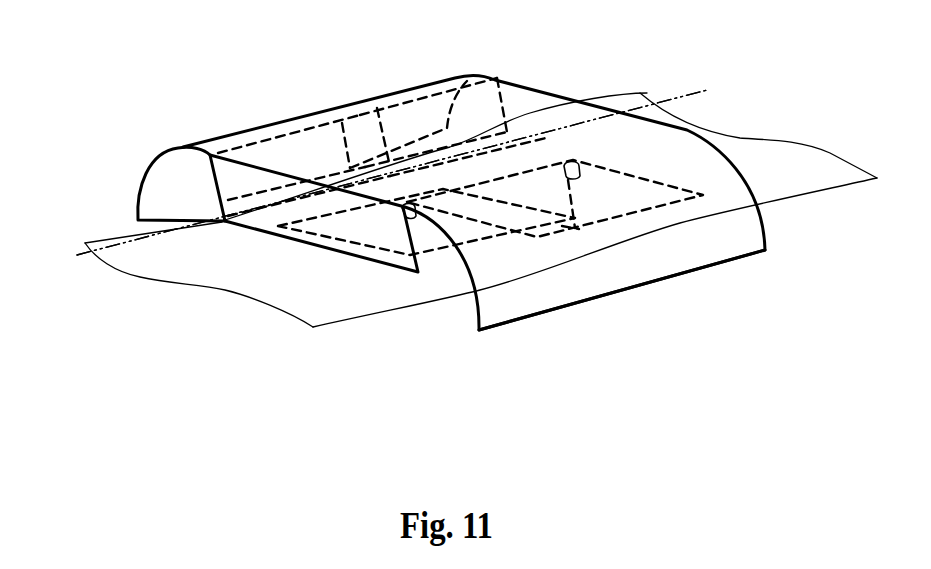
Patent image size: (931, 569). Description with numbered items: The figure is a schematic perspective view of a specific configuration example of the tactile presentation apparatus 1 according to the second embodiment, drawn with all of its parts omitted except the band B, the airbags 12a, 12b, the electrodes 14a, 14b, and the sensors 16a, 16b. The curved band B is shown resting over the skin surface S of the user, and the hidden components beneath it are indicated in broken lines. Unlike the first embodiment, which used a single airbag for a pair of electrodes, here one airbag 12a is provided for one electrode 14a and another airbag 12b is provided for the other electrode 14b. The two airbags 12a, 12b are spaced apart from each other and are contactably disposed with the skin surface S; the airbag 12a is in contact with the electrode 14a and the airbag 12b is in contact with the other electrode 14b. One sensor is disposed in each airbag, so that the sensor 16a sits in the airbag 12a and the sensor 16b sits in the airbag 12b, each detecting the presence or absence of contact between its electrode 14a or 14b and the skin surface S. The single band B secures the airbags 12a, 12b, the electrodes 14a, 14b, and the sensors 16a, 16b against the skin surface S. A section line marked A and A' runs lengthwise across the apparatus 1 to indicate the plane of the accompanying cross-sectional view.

The tactile presentation apparatus 1 is at (530, 70).
The airbag 12a is at (221, 194).
The airbag 12b is at (425, 99).
The electrode 14a is at (380, 233).
The electrode 14b is at (608, 191).
The sensor 16a is at (407, 212).
The sensor 16b is at (568, 180).
The skin surface S is at (787, 157).
The band B is at (752, 232).
The section line A is at (362, 183).
The section line A' is at (405, 163).